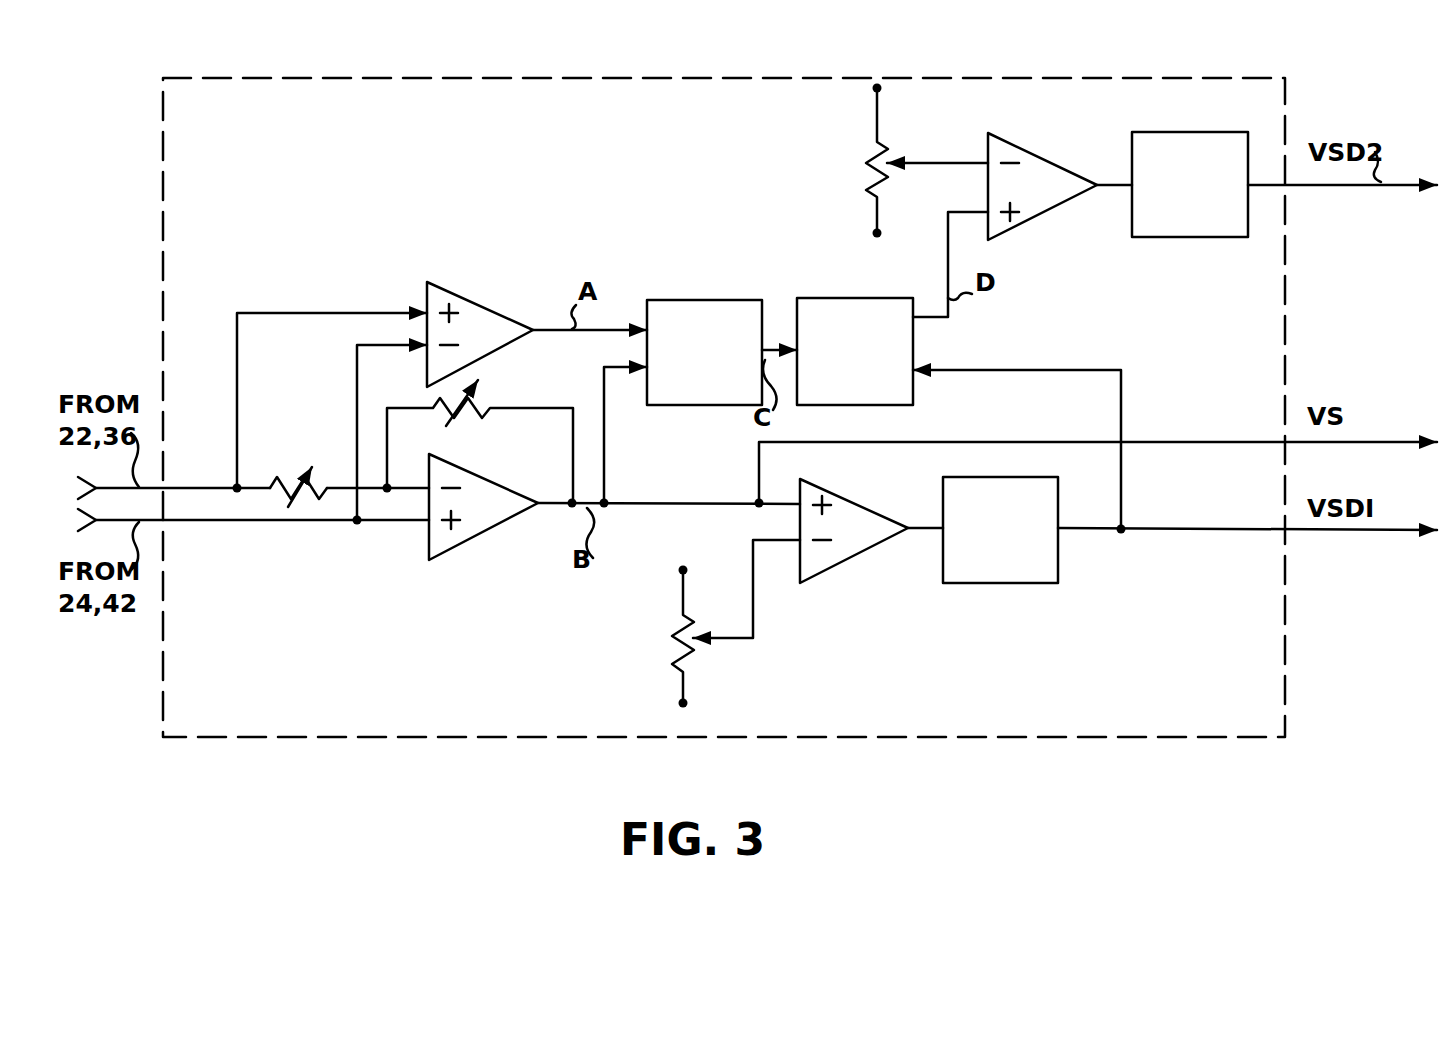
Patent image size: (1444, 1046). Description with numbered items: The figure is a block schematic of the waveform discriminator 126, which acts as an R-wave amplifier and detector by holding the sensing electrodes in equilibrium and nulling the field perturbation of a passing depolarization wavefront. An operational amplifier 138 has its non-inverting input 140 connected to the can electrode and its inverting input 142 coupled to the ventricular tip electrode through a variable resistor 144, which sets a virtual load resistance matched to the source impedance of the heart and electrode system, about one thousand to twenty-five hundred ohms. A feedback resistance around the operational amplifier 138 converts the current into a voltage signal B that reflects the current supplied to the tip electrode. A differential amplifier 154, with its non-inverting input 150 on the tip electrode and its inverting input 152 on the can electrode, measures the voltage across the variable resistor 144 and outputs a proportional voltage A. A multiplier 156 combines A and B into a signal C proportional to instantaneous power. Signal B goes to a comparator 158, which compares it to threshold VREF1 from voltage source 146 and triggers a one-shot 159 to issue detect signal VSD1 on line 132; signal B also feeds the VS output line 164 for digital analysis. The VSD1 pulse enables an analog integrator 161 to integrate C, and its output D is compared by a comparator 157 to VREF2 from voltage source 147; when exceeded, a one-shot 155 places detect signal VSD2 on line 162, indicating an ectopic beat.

The waveform discriminator 126 is at (1108, 740).
The line 132 is at (1332, 532).
The operational amplifier 138 is at (486, 532).
The non-inverting input 140 is at (300, 522).
The inverting input 142 is at (416, 490).
The variable resistor 144 is at (302, 482).
The voltage source 146 is at (670, 644).
The voltage source 147 is at (865, 163).
The non-inverting input 150 is at (322, 312).
The inverting input 152 is at (398, 346).
The differential amplifier 154 is at (494, 310).
The one-shot 155 is at (1178, 238).
The multiplier 156 is at (684, 300).
The comparator 157 is at (1051, 162).
The comparator 158 is at (876, 550).
The one-shot 159 is at (1010, 584).
The analog integrator 161 is at (869, 405).
The line 162 is at (1344, 186).
The VS output line 164 is at (1166, 440).